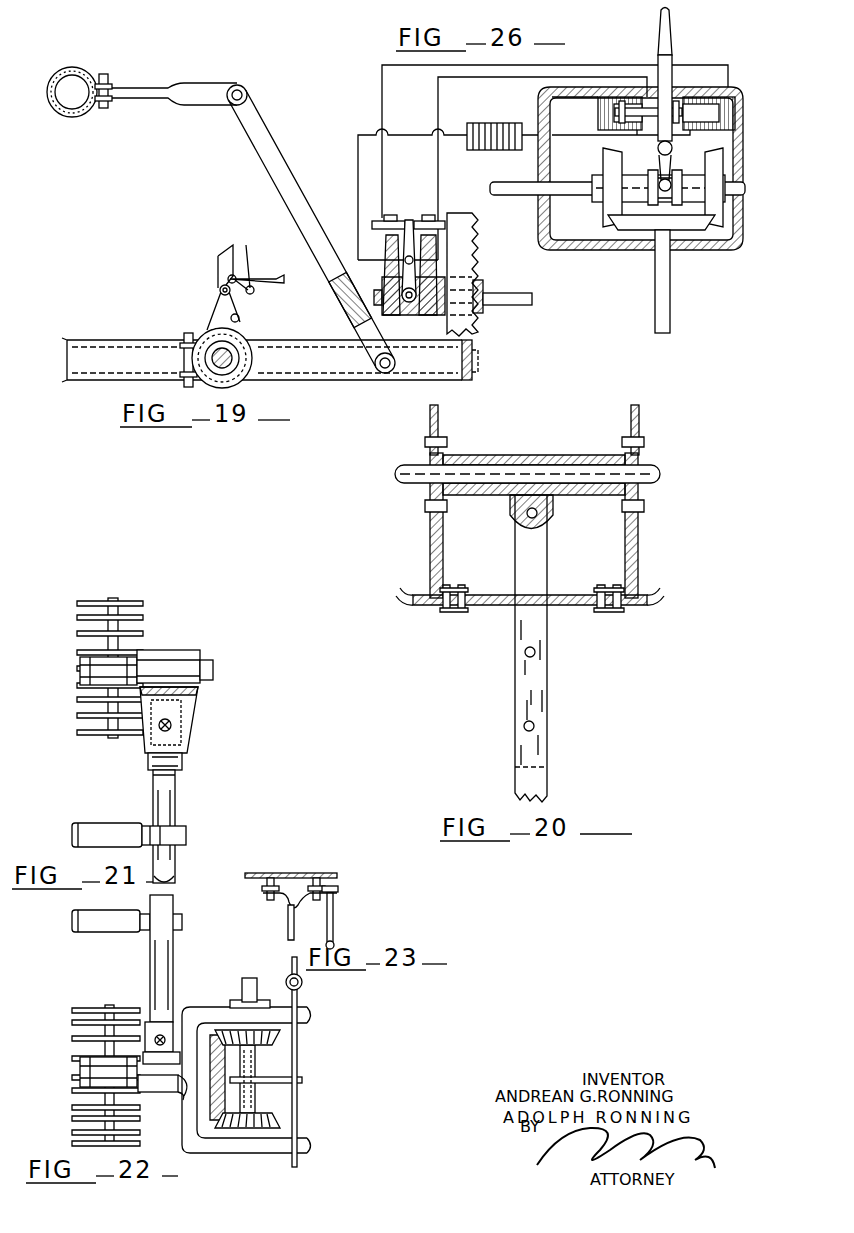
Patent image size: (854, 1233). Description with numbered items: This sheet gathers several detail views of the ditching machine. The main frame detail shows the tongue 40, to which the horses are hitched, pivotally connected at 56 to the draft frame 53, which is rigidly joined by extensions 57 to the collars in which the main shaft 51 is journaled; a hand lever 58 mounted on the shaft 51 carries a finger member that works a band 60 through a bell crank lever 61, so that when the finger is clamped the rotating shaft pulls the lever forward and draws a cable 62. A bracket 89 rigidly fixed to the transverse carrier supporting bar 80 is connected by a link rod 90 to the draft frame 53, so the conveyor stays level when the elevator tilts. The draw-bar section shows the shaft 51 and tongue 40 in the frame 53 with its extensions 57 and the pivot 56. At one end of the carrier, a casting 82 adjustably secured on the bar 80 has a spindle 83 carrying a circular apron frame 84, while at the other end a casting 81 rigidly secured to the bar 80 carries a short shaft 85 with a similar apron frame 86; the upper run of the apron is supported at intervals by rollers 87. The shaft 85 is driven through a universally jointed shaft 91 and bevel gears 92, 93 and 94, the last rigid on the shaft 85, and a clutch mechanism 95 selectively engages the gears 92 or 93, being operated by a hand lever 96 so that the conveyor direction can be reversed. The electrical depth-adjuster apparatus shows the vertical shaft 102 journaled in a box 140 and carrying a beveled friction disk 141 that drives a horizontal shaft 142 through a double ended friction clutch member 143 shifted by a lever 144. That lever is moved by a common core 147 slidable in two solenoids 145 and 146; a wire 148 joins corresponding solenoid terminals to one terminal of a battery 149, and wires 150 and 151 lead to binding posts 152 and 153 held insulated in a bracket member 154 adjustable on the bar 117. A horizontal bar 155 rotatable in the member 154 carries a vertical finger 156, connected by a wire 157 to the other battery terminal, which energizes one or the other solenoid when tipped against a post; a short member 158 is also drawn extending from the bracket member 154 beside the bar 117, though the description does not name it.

In FIG. 19, the tongue 40 is at (66, 378).
In FIG. 20, the tongue 40 is at (548, 780).
In FIG. 19, the main shaft 51 is at (248, 370).
In FIG. 20, the main shaft 51 is at (660, 477).
In FIG. 19, the draft frame 53 is at (364, 372).
In FIG. 20, the draft frame 53 is at (638, 550).
In FIG. 19, the pivotal connection 56 is at (192, 340).
In FIG. 20, the pivotal connection 56 is at (545, 518).
In FIG. 19, the extensions 57 is at (474, 373).
In FIG. 20, the extensions 57 is at (416, 598).
In FIG. 19, the hand lever 58 is at (222, 250).
In FIG. 19, the band 60 is at (214, 320).
In FIG. 19, the bell crank lever 61 is at (222, 286).
In FIG. 19, the cable 62 is at (264, 278).
In FIG. 19, the transverse carrier supporting bar 80 is at (72, 117).
In FIG. 21, the transverse carrier supporting bar 80 is at (175, 810).
In FIG. 22, the transverse carrier supporting bar 80 is at (173, 977).
In FIG. 22, the casting 81 is at (170, 1093).
In FIG. 21, the casting 82 is at (185, 662).
In FIG. 21, the spindle 83 is at (213, 670).
In FIG. 21, the circular apron frame 84 is at (77, 700).
In FIG. 21, the short shaft 85 is at (108, 671).
In FIG. 22, the short shaft 85 is at (80, 1072).
In FIG. 22, the apron frame 86 is at (72, 1040).
In FIG. 21, the rollers 87 is at (106, 823).
In FIG. 22, the rollers 87 is at (90, 932).
In FIG. 19, the bracket 89 is at (128, 90).
In FIG. 19, the link rod 90 is at (279, 159).
In FIG. 22, the universally jointed shaft 91 is at (246, 980).
In FIG. 22, the bevel gear 92 is at (280, 1040).
In FIG. 22, the bevel gear 93 is at (280, 1118).
In FIG. 22, the bevel gear 94 is at (213, 1118).
In FIG. 22, the clutch mechanism 95 is at (262, 1072).
In FIG. 23, the hand lever 96 is at (334, 928).
In FIG. 26, the vertical shaft 102 is at (671, 306).
In FIG. 26, the bar 117 is at (460, 262).
In FIG. 26, the box 140 is at (740, 250).
In FIG. 26, the beveled friction disk 141 is at (648, 226).
In FIG. 26, the horizontal shaft 142 is at (508, 195).
In FIG. 26, the double ended friction clutch member 143 is at (630, 185).
In FIG. 26, the lever 144 is at (672, 23).
In FIG. 26, the solenoid 145 is at (612, 96).
In FIG. 26, the solenoid 146 is at (733, 87).
In FIG. 26, the common core 147 is at (644, 104).
In FIG. 26, the wire 148 is at (573, 137).
In FIG. 26, the battery 149 is at (496, 148).
In FIG. 26, the wire 150 is at (438, 98).
In FIG. 26, the wire 151 is at (387, 92).
In FIG. 26, the binding post 152 is at (437, 222).
In FIG. 26, the binding post 153 is at (390, 218).
In FIG. 26, the bracket member 154 is at (484, 312).
In FIG. 26, the horizontal transversely arranged bar 155 is at (409, 303).
In FIG. 26, the vertical finger 156 is at (413, 252).
In FIG. 26, the wire 157 is at (396, 135).
In FIG. 26, the rod 158 is at (524, 299).